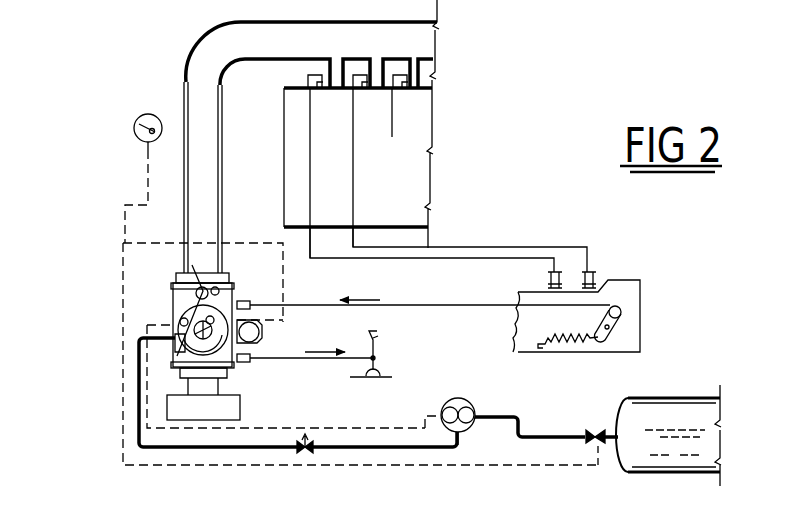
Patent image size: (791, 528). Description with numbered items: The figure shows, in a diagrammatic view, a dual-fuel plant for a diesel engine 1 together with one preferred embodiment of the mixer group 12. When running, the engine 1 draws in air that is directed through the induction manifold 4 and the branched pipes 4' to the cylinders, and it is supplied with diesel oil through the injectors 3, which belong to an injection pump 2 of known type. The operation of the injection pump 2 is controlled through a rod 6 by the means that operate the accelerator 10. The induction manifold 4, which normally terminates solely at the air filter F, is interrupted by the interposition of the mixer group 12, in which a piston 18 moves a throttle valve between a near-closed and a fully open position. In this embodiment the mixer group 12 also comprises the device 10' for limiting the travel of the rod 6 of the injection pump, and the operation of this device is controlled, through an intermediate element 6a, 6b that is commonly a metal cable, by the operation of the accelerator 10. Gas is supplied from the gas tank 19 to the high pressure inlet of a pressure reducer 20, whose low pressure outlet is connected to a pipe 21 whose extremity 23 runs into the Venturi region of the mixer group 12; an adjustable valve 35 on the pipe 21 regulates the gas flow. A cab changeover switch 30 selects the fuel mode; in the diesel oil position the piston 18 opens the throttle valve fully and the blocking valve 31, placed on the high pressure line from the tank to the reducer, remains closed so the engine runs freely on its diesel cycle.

The diesel type engine 1 is at (394, 194).
The injection pump 2 is at (625, 292).
The injectors 3 is at (322, 89).
The manifold 4 is at (267, 136).
The branched pipes 4' is at (364, 155).
The rod 6 is at (616, 318).
The intermediate element 6a is at (473, 305).
The intermediate element 6b is at (290, 360).
The accelerator 10 is at (383, 420).
The device for limiting the travel of the rod 10' is at (120, 333).
The mixer group 12 is at (172, 292).
The piston 18 is at (263, 329).
The gas tank 19 is at (690, 431).
The pressure reducer 20 is at (467, 430).
The pipe 21 is at (205, 450).
The extremity 23 is at (133, 395).
The cab changeover switch 30 is at (136, 119).
The blocking valve 31 is at (590, 443).
The adjustable valve 35 is at (312, 452).
The air filter F is at (188, 408).